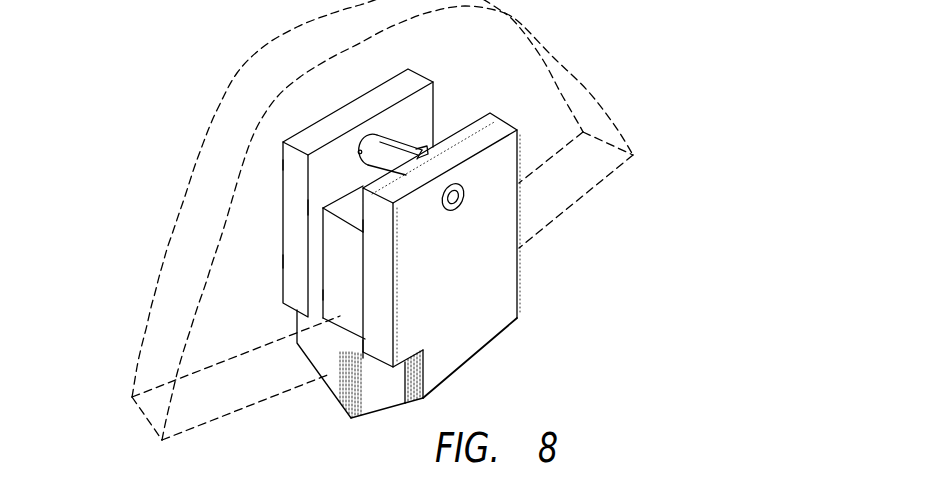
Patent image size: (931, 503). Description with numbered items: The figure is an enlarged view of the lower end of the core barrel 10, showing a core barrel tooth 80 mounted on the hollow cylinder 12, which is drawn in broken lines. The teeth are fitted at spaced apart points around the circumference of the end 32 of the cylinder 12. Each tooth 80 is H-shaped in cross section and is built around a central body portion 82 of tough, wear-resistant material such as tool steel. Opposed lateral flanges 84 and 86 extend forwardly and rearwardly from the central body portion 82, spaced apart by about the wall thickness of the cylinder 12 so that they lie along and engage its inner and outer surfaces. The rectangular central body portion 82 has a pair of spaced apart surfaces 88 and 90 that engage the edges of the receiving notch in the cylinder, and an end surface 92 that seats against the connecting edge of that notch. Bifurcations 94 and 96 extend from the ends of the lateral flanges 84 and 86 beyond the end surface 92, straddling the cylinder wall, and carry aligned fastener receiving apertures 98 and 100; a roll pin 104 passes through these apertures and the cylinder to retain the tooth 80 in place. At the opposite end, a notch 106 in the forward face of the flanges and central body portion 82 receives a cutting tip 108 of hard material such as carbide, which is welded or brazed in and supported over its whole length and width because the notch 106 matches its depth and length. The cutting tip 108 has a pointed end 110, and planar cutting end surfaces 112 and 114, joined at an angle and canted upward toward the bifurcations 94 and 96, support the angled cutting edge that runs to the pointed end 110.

The core barrel 10 is at (118, 136).
The hollow cylinder 12 is at (156, 298).
The end of the core barrel cylinder 32 is at (207, 431).
The core barrel tooth 80 is at (285, 128).
The central body portion 82 is at (345, 296).
The lateral flange 84 is at (294, 262).
The lateral flange 86 is at (376, 320).
The surface of the central body portion 88 is at (352, 278).
The surface of the central body portion 90 is at (518, 260).
The end surface 92 is at (321, 209).
The bifurcation 94 is at (295, 163).
The bifurcation 96 is at (372, 238).
The fastener receiving aperture 98 is at (359, 151).
The fastener receiving aperture 100 is at (463, 193).
The roll pin 104 is at (455, 206).
The notch 106 is at (416, 396).
The cutting tip 108 is at (378, 388).
The pointed end 110 is at (351, 418).
The planar cutting end surface 112 is at (330, 377).
The planar cutting end surface 114 is at (478, 352).